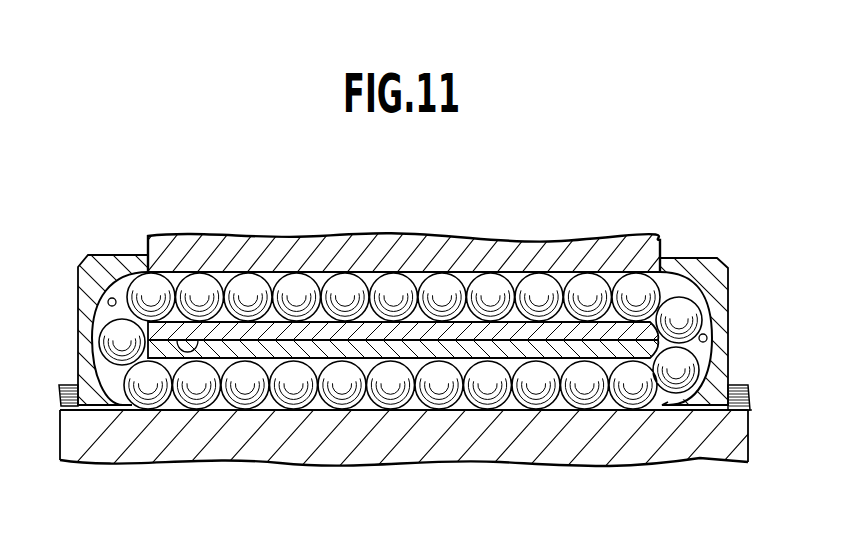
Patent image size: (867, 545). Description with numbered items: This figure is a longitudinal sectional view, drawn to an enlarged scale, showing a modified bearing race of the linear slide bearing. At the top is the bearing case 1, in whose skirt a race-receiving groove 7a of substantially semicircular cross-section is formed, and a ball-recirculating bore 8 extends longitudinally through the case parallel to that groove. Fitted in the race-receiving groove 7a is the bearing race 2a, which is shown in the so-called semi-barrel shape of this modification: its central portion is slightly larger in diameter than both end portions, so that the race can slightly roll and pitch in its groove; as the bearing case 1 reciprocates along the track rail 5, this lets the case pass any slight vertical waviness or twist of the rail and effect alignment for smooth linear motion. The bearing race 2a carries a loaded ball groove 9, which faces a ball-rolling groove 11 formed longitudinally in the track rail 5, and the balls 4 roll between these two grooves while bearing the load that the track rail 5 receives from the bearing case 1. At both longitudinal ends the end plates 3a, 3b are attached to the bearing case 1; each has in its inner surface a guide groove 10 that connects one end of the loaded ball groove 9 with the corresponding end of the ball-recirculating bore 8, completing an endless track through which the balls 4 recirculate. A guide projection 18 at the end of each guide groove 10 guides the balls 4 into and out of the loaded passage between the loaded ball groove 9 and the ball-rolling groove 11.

The bearing case 1 is at (547, 237).
The bearing race 2a is at (292, 333).
The end plate 3a is at (118, 255).
The end plate 3b is at (687, 256).
The balls 4 is at (527, 380).
The track rail 5 is at (738, 385).
The race-receiving groove 7a is at (196, 338).
The ball-recirculating bore 8 is at (348, 296).
The loaded ball groove 9 is at (352, 373).
The guide groove 10 is at (109, 302).
The ball-rolling groove 11 is at (752, 408).
The guide projection 18 is at (118, 384).